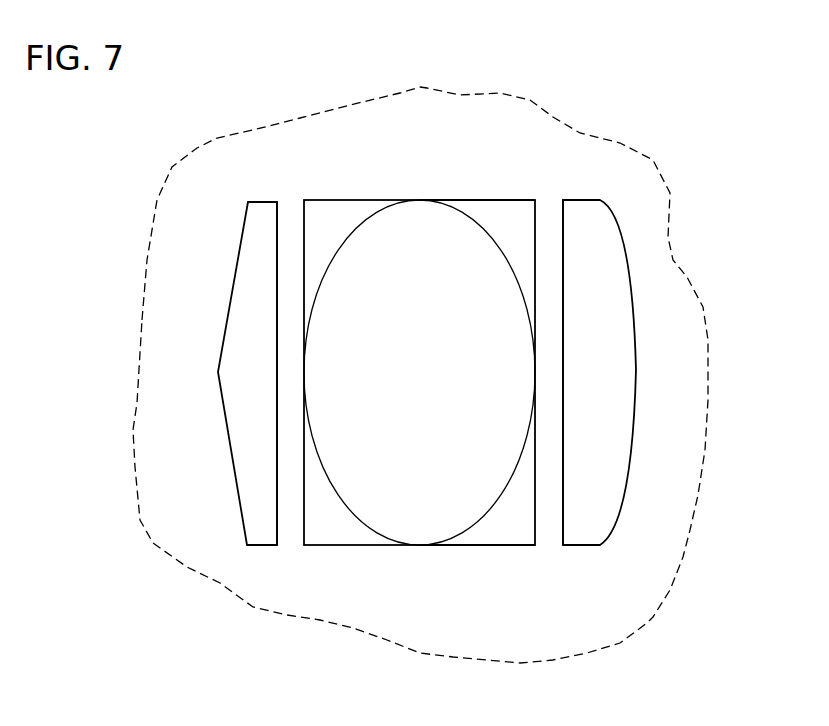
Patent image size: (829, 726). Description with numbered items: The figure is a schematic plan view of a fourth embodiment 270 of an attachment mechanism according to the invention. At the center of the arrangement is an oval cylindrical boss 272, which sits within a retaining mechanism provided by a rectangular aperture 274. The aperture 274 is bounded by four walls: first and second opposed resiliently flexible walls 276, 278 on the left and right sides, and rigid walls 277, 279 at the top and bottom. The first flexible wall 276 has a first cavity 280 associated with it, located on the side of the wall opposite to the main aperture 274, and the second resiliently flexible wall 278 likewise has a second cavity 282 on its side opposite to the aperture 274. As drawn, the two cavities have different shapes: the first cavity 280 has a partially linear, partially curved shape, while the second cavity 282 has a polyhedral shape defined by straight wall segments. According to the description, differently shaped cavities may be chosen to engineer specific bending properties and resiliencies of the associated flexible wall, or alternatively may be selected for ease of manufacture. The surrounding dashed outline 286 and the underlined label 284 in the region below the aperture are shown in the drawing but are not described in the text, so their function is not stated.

The fourth embodiment of attachment mechanism 270 is at (684, 117).
The oval cylindrical boss 272 is at (437, 421).
The rectangular aperture 274 is at (334, 217).
The first resiliently flexible wall 276 is at (553, 210).
The rigid wall 277 is at (458, 208).
The second resiliently flexible wall 278 is at (293, 210).
The rigid wall 279 is at (447, 547).
The first cavity 280 is at (593, 373).
The second cavity 282 is at (247, 345).
The gap region 284 is at (553, 609).
The enclosure 286 is at (652, 617).